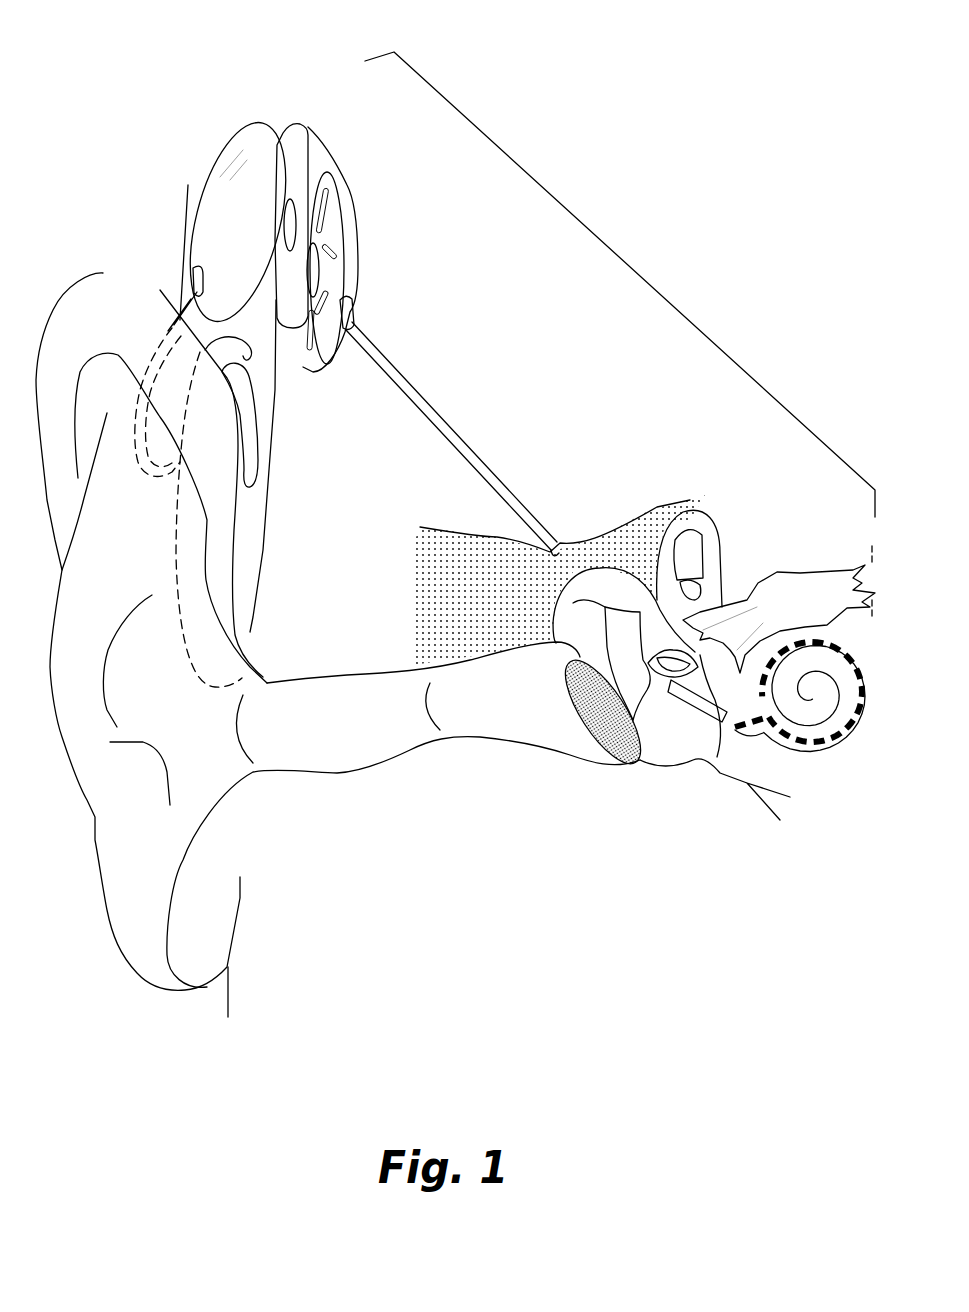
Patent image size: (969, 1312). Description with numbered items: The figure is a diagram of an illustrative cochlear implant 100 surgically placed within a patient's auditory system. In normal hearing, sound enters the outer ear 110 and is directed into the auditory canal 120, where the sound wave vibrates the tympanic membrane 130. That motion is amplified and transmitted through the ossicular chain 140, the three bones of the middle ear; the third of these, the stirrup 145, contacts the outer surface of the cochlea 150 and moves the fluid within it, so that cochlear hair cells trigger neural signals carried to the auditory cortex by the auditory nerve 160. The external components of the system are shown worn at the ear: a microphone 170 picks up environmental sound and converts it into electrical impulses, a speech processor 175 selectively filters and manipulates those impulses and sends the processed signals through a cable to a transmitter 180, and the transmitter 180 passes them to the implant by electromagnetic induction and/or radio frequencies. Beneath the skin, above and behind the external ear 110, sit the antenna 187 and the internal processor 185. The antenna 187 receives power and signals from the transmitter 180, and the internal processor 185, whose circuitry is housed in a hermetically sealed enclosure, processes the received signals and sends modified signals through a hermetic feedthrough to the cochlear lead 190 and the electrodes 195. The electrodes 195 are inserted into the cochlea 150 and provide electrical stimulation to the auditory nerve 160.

The cochlear implant 100 is at (601, 243).
The outer ear 110 is at (127, 848).
The auditory canal 120 is at (393, 757).
The tympanic membrane 130 is at (617, 760).
The ossicular chain 140 is at (603, 587).
The stirrup 145 is at (660, 677).
The cochlea 150 is at (857, 733).
The auditory nerve 160 is at (800, 570).
The microphone 170 is at (258, 458).
The speech processor 175 is at (248, 353).
The transmitter 180 is at (216, 180).
The internal processor 185 is at (331, 200).
The antenna 187 is at (297, 143).
The cochlear lead 190 is at (460, 427).
The electrodes 195 is at (783, 750).